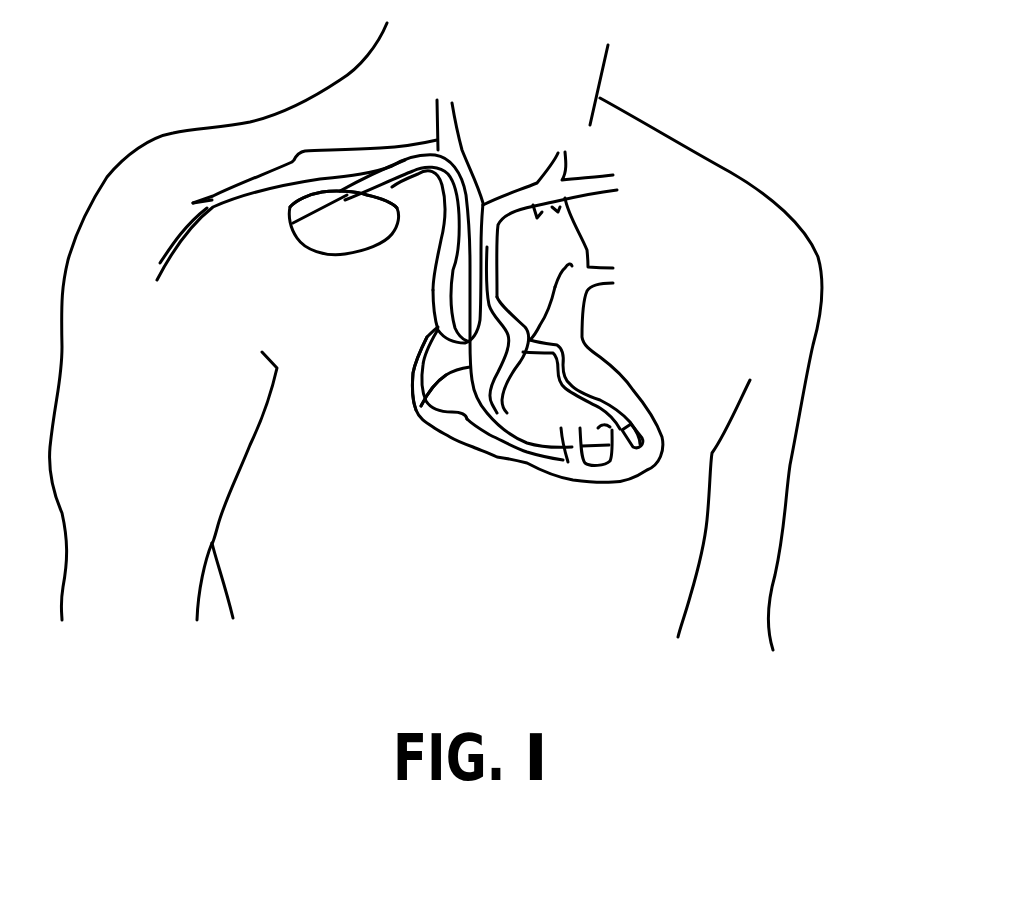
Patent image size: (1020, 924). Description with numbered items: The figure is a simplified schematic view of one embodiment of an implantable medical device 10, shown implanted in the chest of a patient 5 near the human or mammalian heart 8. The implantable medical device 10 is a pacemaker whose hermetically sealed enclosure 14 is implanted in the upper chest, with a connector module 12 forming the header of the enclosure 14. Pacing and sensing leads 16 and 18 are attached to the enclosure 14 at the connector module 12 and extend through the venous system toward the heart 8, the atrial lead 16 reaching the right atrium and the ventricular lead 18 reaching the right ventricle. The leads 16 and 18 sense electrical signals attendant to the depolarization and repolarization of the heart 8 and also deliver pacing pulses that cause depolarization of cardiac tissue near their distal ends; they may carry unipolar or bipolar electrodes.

The patient body 5 is at (712, 97).
The heart 8 is at (637, 396).
The implantable medical device 10 is at (297, 253).
The connector module 12 is at (290, 208).
The hermetically sealed enclosure 14 is at (360, 228).
The pacing and sensing lead 16 is at (433, 288).
The pacing and sensing lead 18 is at (419, 409).